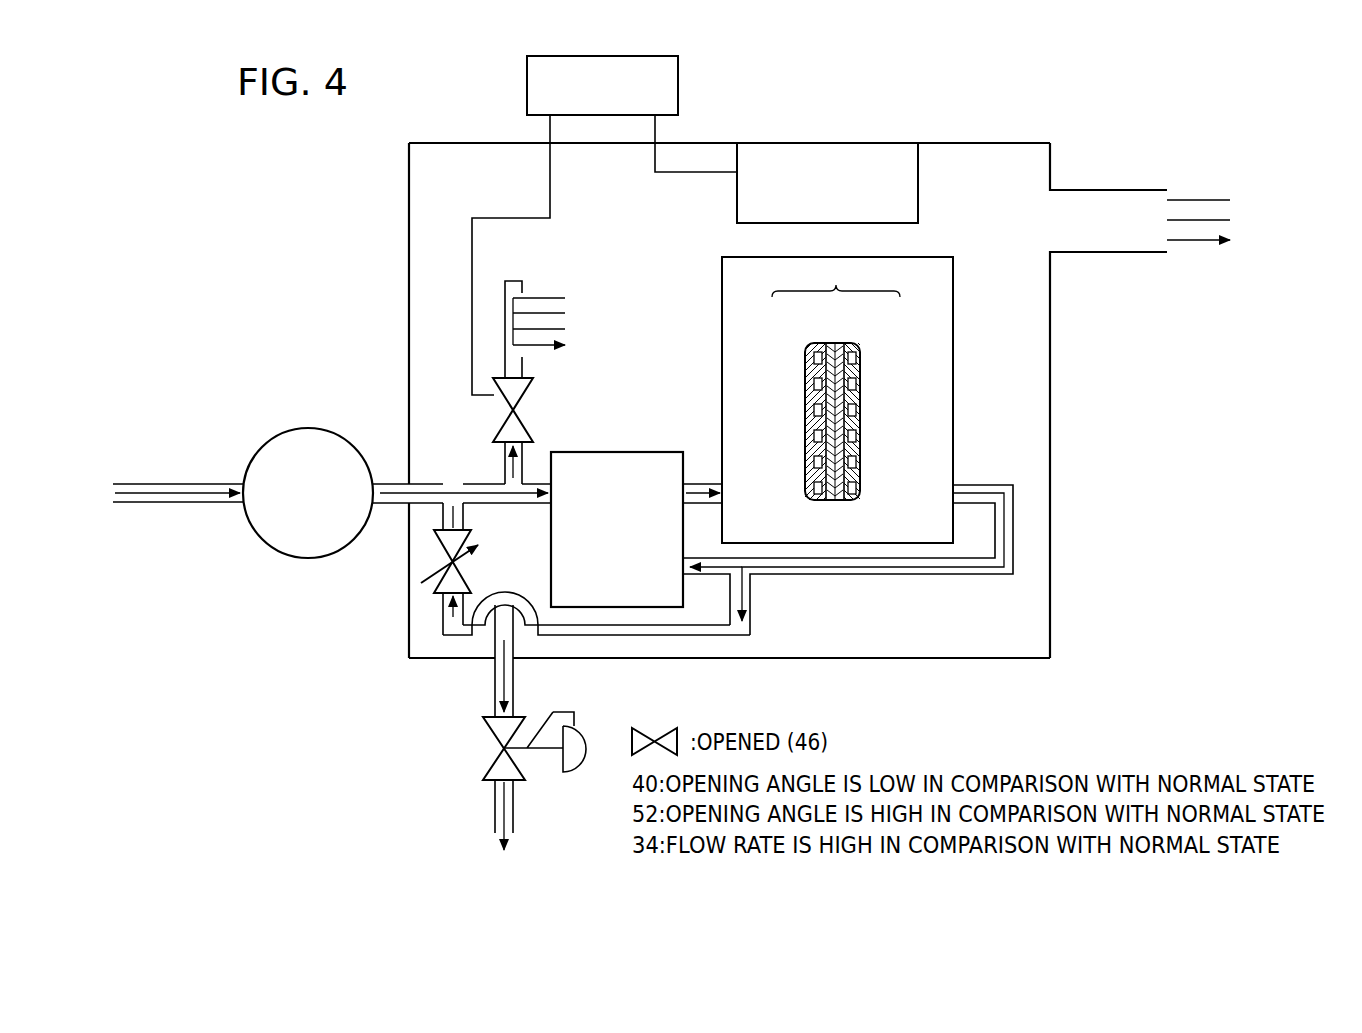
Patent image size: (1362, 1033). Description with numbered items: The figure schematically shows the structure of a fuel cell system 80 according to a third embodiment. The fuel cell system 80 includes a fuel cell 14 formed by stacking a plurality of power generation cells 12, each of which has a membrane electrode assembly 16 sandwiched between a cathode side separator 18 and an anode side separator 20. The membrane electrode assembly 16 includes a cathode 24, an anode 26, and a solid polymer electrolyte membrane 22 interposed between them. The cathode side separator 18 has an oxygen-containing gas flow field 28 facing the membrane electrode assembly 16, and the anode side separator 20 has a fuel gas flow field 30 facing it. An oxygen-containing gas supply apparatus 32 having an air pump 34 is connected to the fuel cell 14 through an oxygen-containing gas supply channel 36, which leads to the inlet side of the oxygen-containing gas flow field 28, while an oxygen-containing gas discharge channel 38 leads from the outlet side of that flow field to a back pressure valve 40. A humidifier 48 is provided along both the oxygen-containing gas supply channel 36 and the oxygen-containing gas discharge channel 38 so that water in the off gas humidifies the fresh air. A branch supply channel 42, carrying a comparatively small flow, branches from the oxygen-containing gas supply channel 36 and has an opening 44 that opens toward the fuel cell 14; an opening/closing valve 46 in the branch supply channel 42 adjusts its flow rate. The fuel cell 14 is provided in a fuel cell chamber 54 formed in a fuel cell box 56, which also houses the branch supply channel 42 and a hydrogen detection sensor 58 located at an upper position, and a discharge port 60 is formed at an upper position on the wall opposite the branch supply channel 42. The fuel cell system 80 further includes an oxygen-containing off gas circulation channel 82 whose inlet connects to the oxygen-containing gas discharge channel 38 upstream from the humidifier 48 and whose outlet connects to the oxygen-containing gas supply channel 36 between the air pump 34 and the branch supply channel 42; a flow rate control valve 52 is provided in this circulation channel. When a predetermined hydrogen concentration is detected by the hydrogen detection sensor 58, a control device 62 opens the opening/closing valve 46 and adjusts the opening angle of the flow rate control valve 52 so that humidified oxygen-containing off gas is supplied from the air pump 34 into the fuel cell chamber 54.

The fuel cell system 80 is at (273, 149).
The control device 62 is at (681, 74).
The fuel cell box 56 is at (463, 140).
The fuel cell chamber 54 is at (1013, 157).
The discharge port 60 is at (1108, 195).
The hydrogen detection sensor 58 is at (919, 158).
The fuel cell 14 is at (726, 254).
The power generation cell 12 is at (806, 385).
The membrane electrode assembly 16 is at (836, 280).
The cathode side separator 18 is at (808, 358).
The anode side separator 20 is at (860, 355).
The solid polymer electrolyte membrane 22 is at (834, 344).
The cathode 24 is at (818, 344).
The anode 26 is at (847, 344).
The oxygen-containing gas flow field 28 is at (808, 438).
The fuel gas flow field 30 is at (850, 438).
The oxygen-containing gas supply apparatus 32 is at (283, 417).
The air pump 34 is at (362, 460).
The oxygen-containing gas supply channel 36 is at (462, 480).
The oxygen-containing gas discharge channel 38 is at (781, 576).
The back pressure valve 40 is at (486, 755).
The branch supply channel 42 is at (505, 330).
The opening 44 is at (524, 290).
The opening/closing valve 46 is at (527, 427).
The humidifier 48 is at (646, 452).
The flow rate control valve 52 is at (434, 560).
The oxygen-containing off gas circulation channel 82 is at (683, 658).